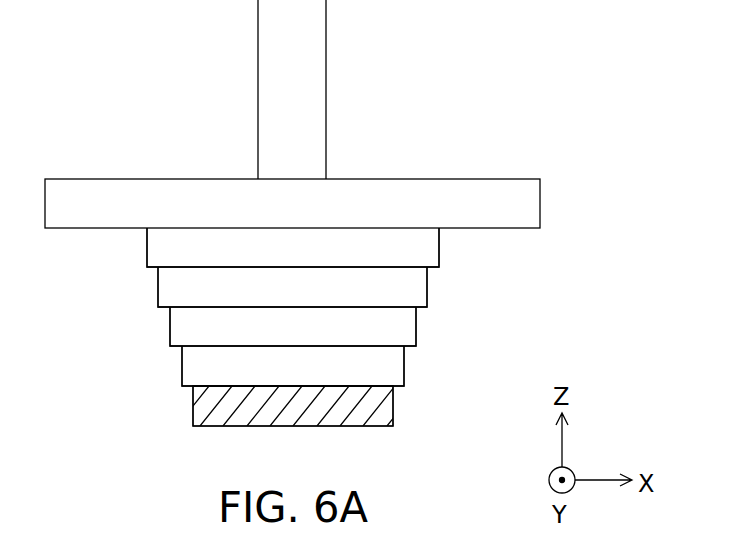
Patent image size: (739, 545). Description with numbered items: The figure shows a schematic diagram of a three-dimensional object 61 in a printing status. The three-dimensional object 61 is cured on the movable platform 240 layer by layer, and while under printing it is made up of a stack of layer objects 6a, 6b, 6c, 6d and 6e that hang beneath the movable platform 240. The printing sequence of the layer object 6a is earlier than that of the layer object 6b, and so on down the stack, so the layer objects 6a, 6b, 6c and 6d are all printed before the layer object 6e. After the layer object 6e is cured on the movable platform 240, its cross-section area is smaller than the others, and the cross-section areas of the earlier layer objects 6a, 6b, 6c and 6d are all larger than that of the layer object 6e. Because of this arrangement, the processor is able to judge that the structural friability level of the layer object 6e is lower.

The movable platform 240 is at (299, 83).
The 3D object 61 is at (170, 334).
The layer object 6a is at (425, 248).
The layer object 6b is at (414, 286).
The layer object 6c is at (403, 326).
The layer object 6d is at (392, 366).
The layer object 6e is at (380, 404).